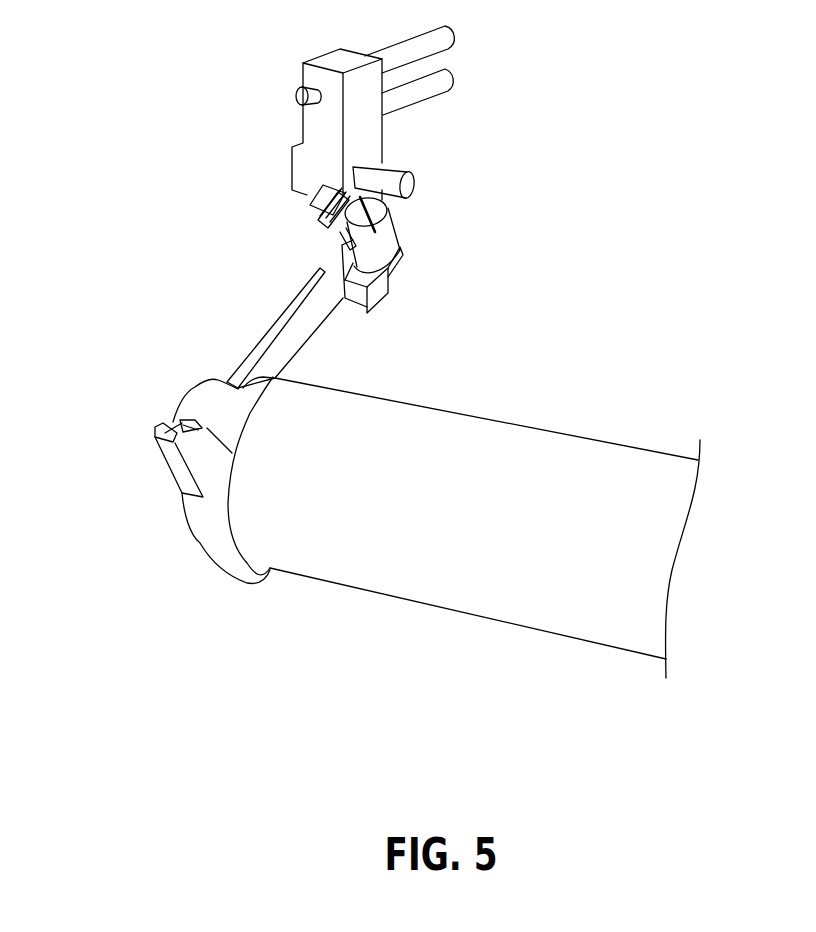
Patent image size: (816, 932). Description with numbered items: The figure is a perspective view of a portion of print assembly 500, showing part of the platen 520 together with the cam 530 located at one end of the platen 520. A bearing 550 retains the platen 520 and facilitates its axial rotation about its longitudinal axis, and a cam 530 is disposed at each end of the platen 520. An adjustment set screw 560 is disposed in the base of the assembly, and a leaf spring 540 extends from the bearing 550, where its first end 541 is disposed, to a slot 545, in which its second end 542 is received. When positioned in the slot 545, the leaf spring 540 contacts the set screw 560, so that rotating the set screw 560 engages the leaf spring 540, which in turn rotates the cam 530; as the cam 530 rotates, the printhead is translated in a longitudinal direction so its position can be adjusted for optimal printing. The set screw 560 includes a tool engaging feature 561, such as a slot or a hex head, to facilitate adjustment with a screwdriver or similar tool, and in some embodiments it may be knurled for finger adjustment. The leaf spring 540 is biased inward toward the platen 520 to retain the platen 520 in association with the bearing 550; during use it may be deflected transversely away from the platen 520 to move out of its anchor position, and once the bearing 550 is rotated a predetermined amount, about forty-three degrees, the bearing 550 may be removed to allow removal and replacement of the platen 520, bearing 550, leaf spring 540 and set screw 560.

The portion of print assembly 500 is at (147, 72).
The platen 520 is at (477, 618).
The cam 530 is at (163, 430).
The leaf spring 540 is at (272, 330).
The first end 541 is at (189, 378).
The second end 542 is at (343, 288).
The slot 545 is at (340, 239).
The bearing 550 is at (207, 563).
The adjustment set screw 560 is at (388, 232).
The tool engaging feature 561 is at (368, 196).